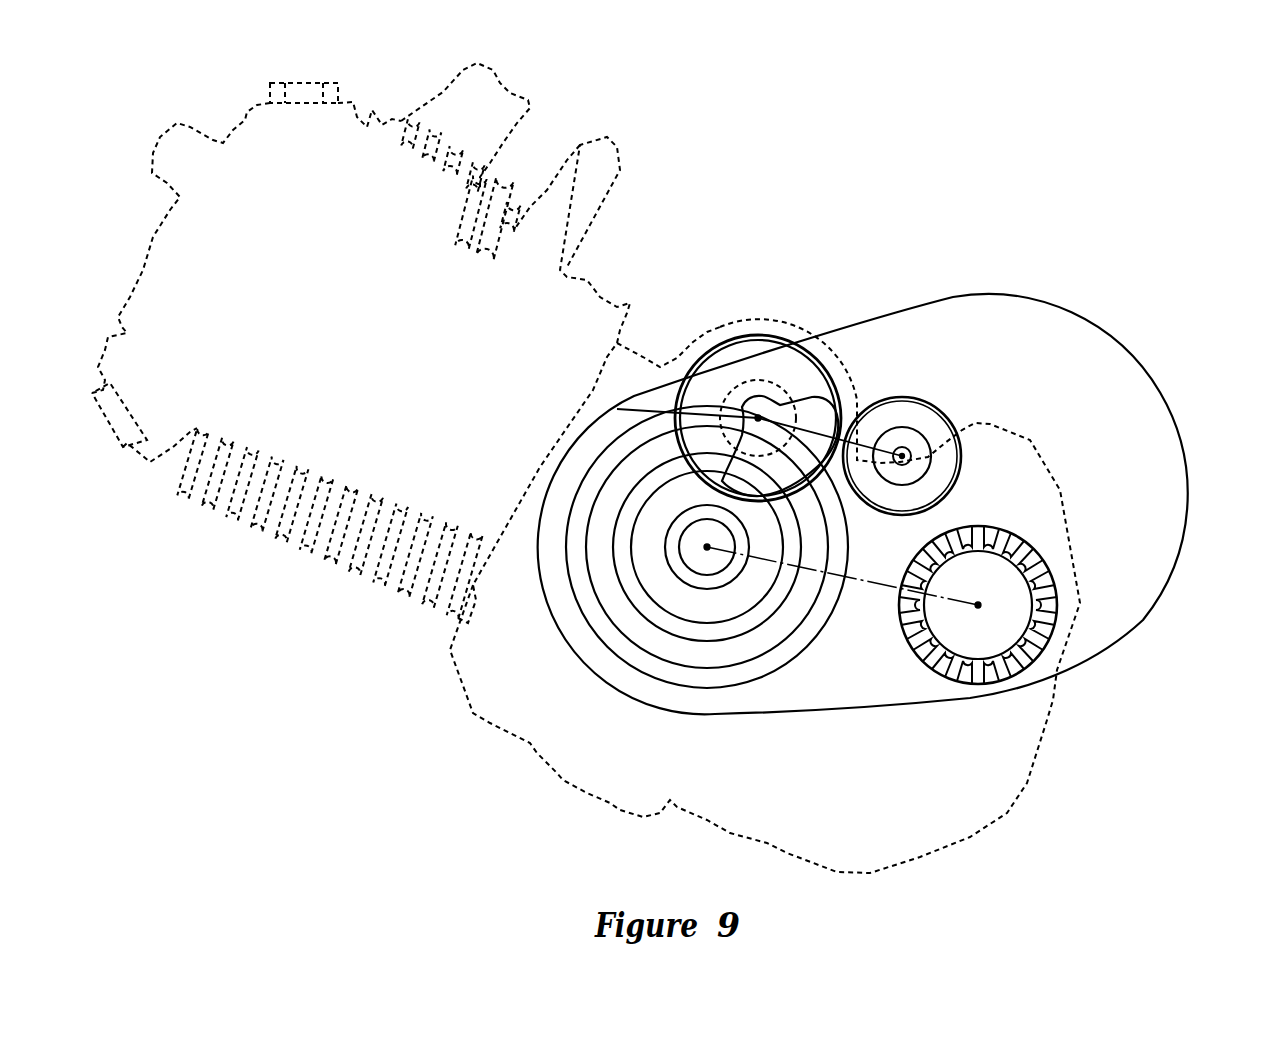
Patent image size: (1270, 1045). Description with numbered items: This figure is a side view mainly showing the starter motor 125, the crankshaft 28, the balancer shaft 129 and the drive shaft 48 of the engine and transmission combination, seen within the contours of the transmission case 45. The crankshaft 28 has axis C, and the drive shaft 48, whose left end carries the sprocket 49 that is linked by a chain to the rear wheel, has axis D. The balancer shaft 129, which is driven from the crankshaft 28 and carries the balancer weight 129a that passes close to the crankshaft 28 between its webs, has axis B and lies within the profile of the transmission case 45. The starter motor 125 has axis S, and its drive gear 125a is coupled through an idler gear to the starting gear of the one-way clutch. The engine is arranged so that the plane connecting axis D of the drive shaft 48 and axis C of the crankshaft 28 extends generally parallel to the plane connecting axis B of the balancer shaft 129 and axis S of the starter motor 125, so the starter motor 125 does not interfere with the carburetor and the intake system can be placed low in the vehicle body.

The crankshaft 28 is at (698, 562).
The transmission case 45 is at (1156, 388).
The drive shaft 48 is at (1010, 627).
The sprocket 49 is at (1043, 570).
The starter motor 125 is at (897, 412).
The drive gear of the starter motor 125a is at (904, 452).
The balancer shaft 129 is at (755, 402).
The balancer weight 129a is at (819, 412).